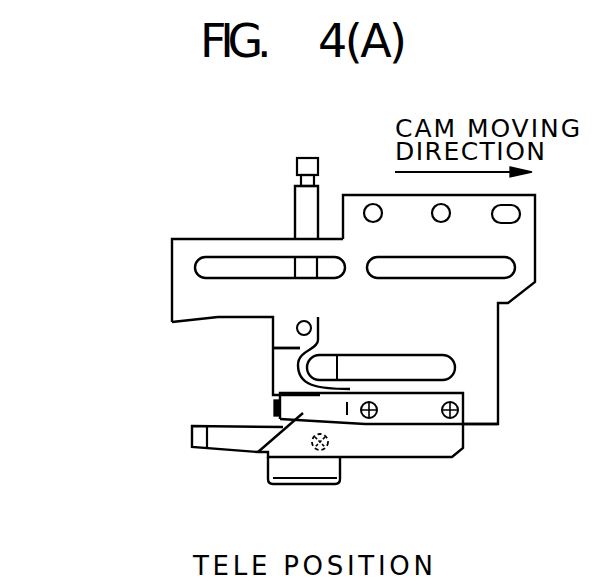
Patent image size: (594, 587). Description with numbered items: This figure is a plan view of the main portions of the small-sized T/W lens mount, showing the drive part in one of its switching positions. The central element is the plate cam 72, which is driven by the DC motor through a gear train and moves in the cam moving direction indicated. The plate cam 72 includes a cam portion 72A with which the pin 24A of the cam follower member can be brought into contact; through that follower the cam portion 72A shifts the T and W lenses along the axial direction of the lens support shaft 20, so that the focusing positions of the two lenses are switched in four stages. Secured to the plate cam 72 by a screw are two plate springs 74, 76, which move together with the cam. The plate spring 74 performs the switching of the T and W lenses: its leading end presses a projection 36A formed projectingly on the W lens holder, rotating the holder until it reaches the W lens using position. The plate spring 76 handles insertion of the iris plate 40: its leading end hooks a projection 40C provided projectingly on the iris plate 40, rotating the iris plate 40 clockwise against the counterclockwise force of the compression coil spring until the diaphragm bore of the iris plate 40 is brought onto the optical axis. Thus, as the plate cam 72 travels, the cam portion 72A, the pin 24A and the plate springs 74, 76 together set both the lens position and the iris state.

The lens support shaft 20 is at (293, 210).
The plate cam 72 is at (247, 242).
The cam portion 72A is at (216, 322).
The pin 24A is at (298, 333).
The projection 36A is at (274, 408).
The plate spring 76 is at (192, 440).
The plate spring 74 is at (258, 452).
The iris plate 40 is at (280, 470).
The projection 40C is at (330, 450).